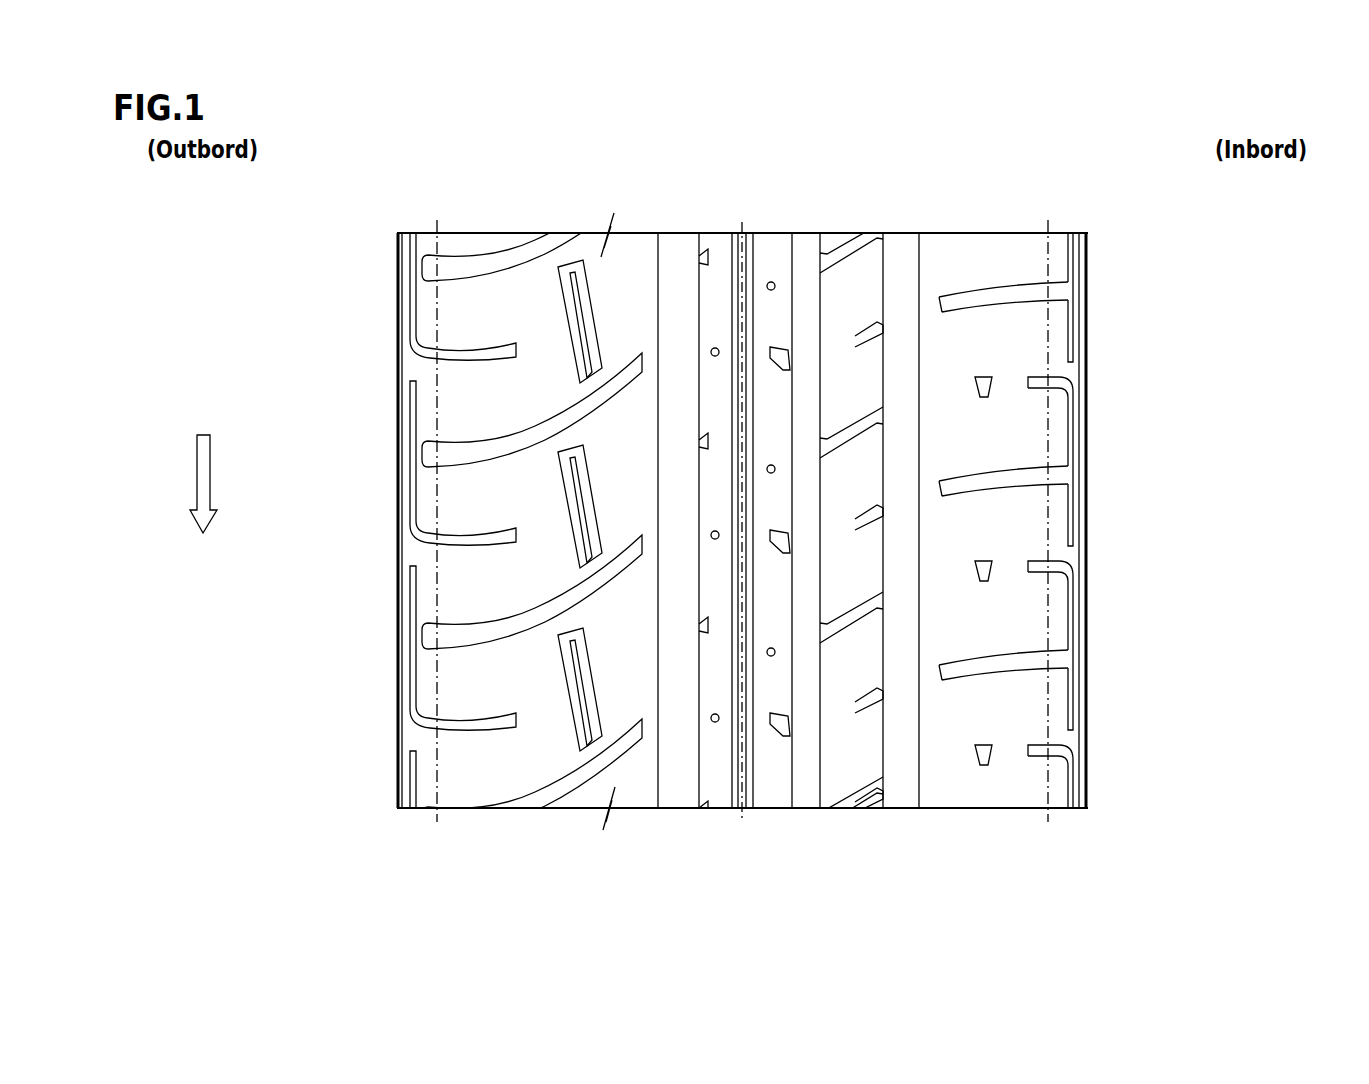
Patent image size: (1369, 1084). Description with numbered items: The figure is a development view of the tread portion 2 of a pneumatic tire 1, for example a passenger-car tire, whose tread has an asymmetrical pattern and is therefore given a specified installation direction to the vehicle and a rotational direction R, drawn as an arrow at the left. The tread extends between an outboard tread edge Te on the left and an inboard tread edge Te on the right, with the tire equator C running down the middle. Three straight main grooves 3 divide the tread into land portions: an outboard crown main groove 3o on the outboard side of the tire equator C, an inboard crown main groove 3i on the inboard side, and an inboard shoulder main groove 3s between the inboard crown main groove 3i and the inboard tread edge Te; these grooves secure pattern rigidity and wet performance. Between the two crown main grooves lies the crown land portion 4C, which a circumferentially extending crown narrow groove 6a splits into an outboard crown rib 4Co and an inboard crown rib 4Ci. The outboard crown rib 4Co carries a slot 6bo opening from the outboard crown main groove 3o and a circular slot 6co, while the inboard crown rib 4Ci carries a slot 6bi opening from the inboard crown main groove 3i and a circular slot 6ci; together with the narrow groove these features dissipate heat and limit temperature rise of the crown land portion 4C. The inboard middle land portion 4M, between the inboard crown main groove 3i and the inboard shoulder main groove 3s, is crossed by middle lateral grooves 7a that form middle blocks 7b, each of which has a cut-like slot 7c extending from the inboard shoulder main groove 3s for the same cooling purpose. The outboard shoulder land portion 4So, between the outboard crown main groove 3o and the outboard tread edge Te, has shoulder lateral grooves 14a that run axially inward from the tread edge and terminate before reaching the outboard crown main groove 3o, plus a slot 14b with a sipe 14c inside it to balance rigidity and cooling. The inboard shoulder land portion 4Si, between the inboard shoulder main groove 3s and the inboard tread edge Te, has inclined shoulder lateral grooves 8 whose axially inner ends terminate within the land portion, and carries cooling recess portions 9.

The pneumatic tire 1 is at (483, 212).
The tread portion 2 is at (387, 151).
The main grooves 3 is at (759, 480).
The outboard crown main groove 3o is at (678, 266).
The inboard crown main groove 3i is at (800, 258).
The inboard shoulder main groove 3s is at (903, 258).
The outboard shoulder land portion 4So is at (508, 778).
The crown land portion 4C is at (785, 880).
The outboard crown rib 4Co is at (716, 778).
The inboard crown rib 4Ci is at (770, 778).
The inboard middle land portion 4M is at (866, 760).
The inboard shoulder land portion 4Si is at (1008, 778).
The crown narrow groove 6a is at (735, 266).
The slot 6bo is at (700, 626).
The circular slot 6co is at (712, 718).
The slot 6bi is at (785, 722).
The circular slot 6ci is at (775, 656).
The middle lateral grooves 7a is at (867, 421).
The middle blocks 7b is at (857, 733).
The cut-like slot 7c is at (872, 702).
The shoulder lateral grooves 8 is at (1000, 480).
The cooling recess portion 9 is at (985, 385).
The shoulder lateral grooves 14a is at (477, 455).
The slot 14b is at (563, 478).
The sipe 14c is at (567, 538).
The tread edge Te is at (748, 508).
The tire equator C is at (743, 508).
The rotational direction R is at (194, 484).